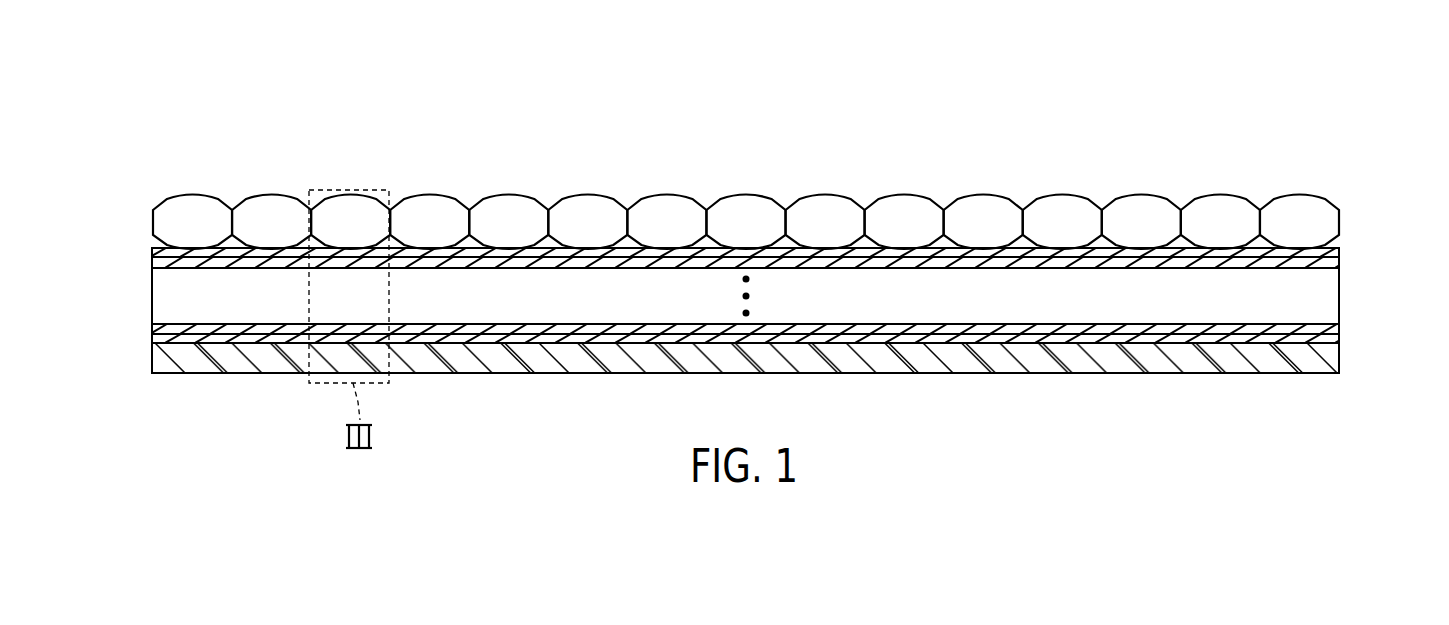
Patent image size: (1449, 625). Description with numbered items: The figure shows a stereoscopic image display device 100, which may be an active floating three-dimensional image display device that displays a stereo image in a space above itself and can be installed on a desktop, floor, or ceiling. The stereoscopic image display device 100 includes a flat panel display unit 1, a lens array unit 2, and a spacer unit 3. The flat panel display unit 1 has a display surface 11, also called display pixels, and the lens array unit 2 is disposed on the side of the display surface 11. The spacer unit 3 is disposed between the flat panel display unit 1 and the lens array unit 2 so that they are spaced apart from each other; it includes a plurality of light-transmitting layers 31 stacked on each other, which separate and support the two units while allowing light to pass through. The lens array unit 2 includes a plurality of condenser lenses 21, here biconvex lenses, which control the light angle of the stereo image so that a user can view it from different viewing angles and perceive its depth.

The stereoscopic image display device 100 is at (1393, 66).
The flat panel display unit 1 is at (1233, 373).
The display surface 11 is at (1308, 341).
The lens array unit 2 is at (1113, 153).
The condenser lens 21 is at (1140, 214).
The spacer unit 3 is at (701, 292).
The light-transmitting layer 31 is at (152, 257).